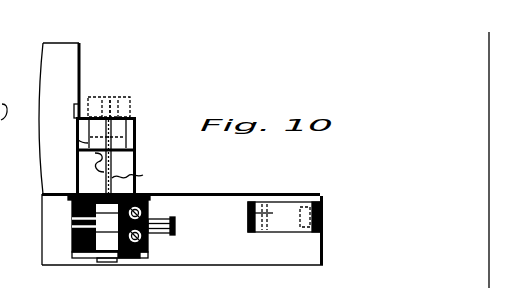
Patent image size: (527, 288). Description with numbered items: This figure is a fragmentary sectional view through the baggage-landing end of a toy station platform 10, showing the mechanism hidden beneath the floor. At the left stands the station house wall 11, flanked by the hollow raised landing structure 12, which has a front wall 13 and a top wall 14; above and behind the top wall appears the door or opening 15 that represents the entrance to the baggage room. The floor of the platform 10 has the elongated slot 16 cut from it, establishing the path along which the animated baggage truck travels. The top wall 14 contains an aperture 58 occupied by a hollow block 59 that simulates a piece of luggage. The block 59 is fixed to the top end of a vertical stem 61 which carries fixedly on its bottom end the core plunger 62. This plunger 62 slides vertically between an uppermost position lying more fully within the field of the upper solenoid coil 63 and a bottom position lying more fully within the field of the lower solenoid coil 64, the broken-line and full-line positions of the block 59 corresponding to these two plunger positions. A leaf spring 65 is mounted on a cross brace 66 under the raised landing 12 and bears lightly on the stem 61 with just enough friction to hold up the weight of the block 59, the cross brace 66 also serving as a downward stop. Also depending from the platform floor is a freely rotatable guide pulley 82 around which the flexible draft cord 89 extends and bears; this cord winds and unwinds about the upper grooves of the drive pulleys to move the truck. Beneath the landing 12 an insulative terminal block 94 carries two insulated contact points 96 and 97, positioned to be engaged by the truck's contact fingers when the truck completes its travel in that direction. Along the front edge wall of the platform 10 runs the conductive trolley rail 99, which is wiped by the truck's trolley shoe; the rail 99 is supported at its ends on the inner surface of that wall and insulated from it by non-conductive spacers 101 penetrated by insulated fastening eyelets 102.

The station platform 10 is at (243, 194).
The wall plate 11 is at (72, 44).
The hollow raised landing structure 12 is at (148, 133).
The front wall 13 is at (140, 153).
The top wall 14 is at (138, 117).
The door or opening 15 is at (80, 63).
The elongated slot 16 is at (188, 194).
The aperture 58 is at (95, 108).
The hollow block 59 is at (122, 98).
The vertical stem 61 is at (143, 175).
The core plunger 62 is at (117, 262).
The upper solenoid coil 63 is at (100, 204).
The lower solenoid coil 64 is at (100, 246).
The leaf spring 65 is at (95, 161).
The cross brace 66 is at (86, 145).
The guide pulley 82 is at (165, 222).
The draft cord 89 is at (175, 229).
The terminal block 94 is at (147, 245).
The contact point 96 is at (120, 213).
The contact point 97 is at (120, 232).
The trolley rail 99 is at (263, 214).
The non-conductive spacers 101 is at (318, 233).
The insulated fastening eyelets 102 is at (322, 220).